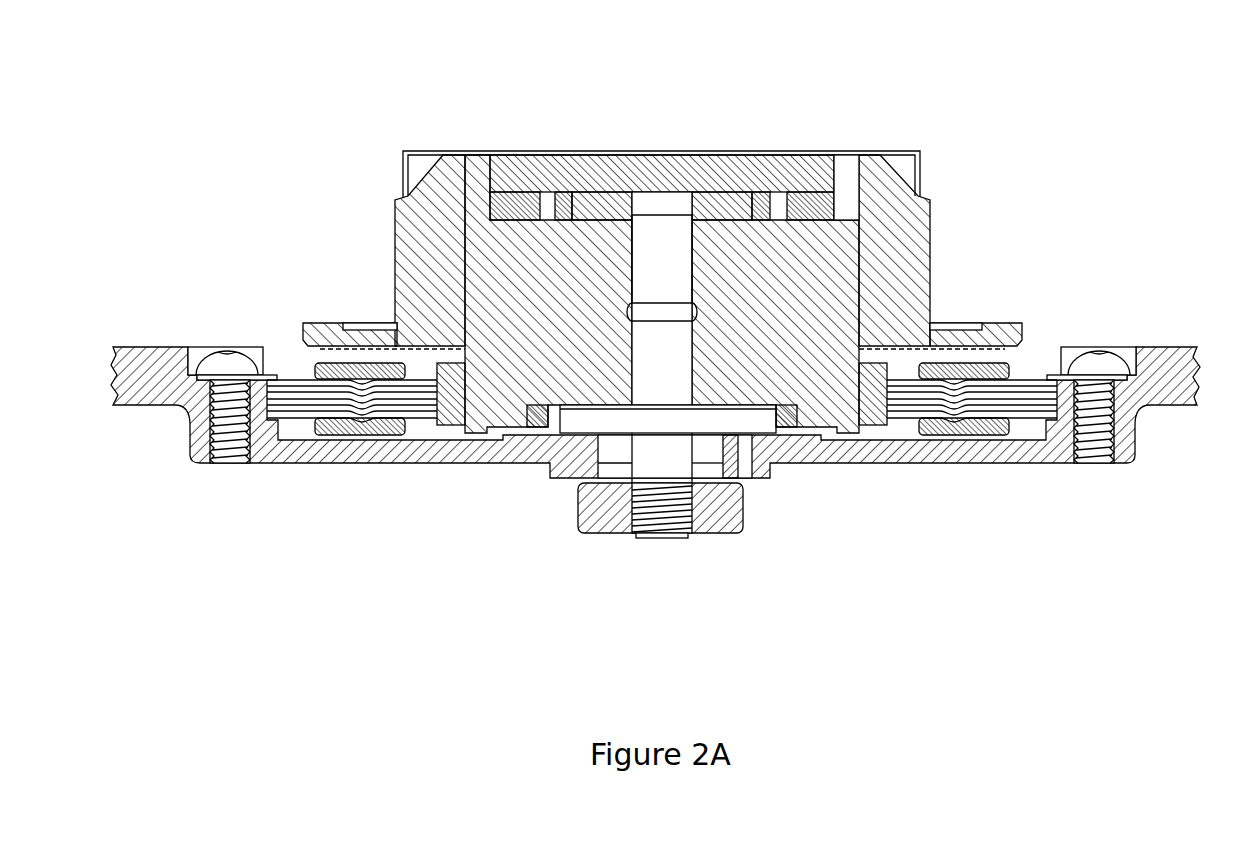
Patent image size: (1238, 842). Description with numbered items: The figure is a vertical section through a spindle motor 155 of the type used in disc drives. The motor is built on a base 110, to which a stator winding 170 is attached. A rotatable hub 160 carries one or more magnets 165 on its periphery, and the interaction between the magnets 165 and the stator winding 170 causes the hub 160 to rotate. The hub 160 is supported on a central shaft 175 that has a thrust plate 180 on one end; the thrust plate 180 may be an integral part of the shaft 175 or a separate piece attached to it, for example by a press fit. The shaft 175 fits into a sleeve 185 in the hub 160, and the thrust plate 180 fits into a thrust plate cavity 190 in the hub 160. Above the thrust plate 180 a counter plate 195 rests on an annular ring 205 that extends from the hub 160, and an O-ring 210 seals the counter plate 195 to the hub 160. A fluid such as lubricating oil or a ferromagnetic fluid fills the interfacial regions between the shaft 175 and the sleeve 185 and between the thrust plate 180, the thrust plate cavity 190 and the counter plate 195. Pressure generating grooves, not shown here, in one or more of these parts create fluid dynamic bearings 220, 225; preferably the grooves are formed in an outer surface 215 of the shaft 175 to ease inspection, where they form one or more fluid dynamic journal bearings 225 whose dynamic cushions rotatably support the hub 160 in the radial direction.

The base 110 is at (910, 453).
The spindle motor 155 is at (348, 155).
The rotatable hub 160 is at (380, 296).
The magnets 165 is at (878, 427).
The stator winding 170 is at (1003, 432).
The shaft 175 is at (684, 368).
The thrust plate 180 is at (755, 192).
The sleeve 185 is at (862, 290).
The thrust plate cavity 190 is at (815, 203).
The counter plate 195 is at (548, 166).
The annular ring 205 is at (882, 257).
The O-ring 210 is at (838, 198).
The outer surface of the shaft 215 is at (620, 283).
The fluid dynamic bearing 220 is at (600, 175).
The fluid dynamic journal bearing 225 is at (715, 272).